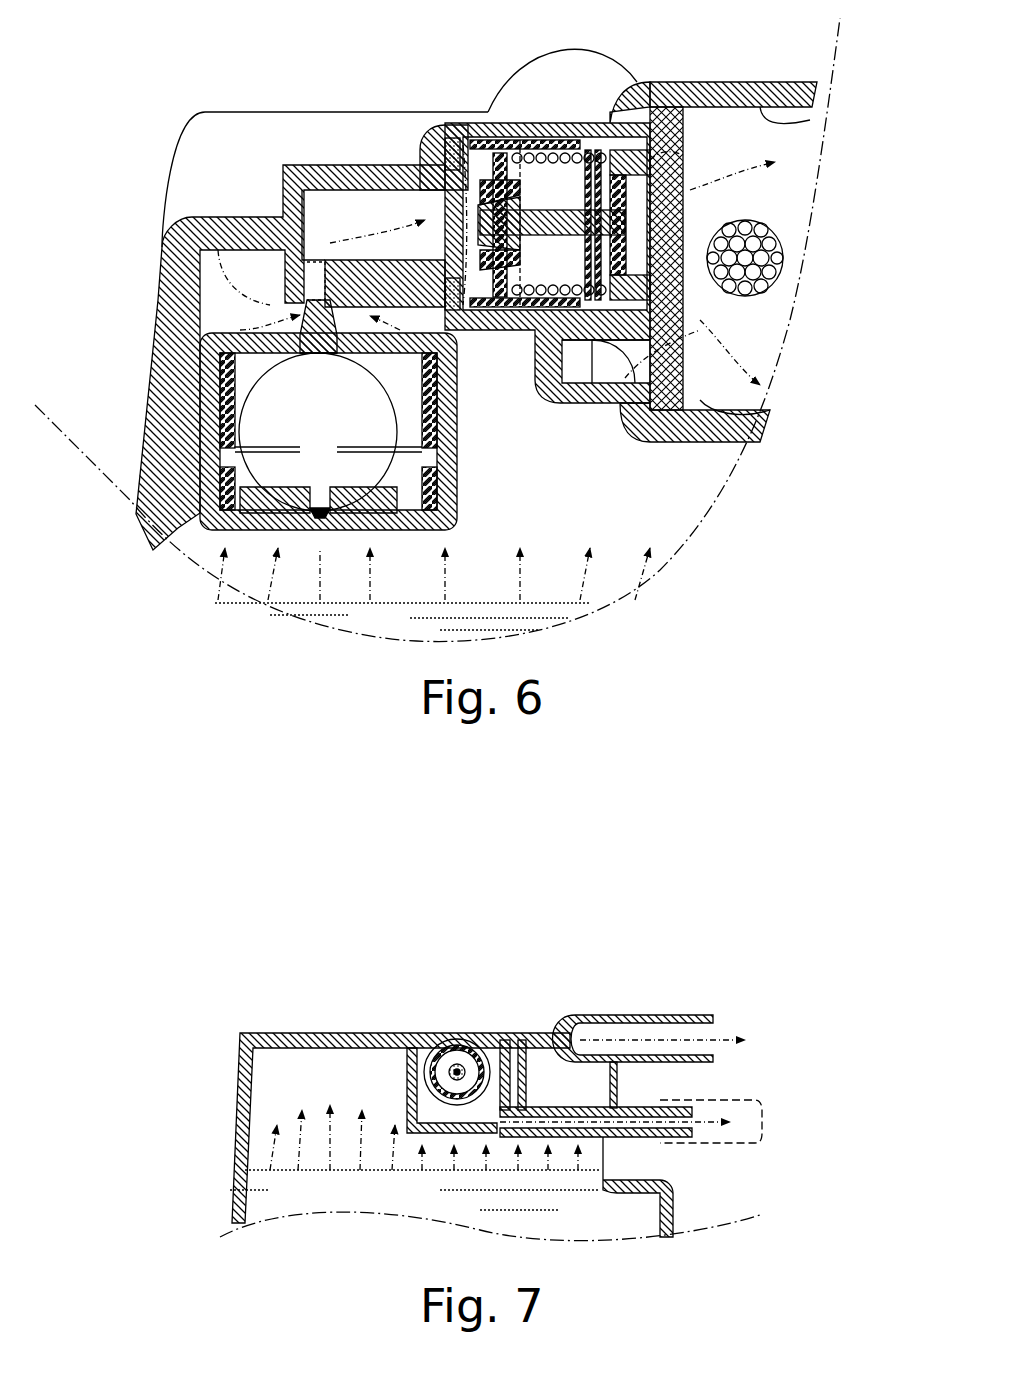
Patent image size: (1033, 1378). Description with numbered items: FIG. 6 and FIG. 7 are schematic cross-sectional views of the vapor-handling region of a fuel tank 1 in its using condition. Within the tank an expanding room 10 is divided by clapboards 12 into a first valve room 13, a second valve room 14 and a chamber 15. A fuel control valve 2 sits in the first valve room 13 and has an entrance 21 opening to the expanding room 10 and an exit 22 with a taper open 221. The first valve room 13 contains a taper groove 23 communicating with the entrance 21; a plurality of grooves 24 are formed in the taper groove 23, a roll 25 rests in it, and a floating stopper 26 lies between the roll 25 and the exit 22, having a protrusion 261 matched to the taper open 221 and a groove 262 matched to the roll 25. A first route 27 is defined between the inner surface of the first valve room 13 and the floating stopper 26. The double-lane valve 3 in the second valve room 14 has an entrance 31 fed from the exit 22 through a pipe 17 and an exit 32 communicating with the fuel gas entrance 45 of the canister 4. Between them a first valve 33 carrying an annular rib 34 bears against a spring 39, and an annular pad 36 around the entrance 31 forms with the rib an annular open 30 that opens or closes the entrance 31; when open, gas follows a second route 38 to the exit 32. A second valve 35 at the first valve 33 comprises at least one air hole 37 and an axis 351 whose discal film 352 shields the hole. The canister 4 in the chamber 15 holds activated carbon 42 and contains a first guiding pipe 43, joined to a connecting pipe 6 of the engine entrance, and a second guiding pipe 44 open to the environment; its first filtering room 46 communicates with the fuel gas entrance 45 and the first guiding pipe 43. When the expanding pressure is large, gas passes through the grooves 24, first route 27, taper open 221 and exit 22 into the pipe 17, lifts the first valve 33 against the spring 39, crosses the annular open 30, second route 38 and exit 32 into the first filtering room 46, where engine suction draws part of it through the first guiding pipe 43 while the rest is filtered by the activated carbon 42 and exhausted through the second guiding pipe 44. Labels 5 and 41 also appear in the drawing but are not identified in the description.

In FIG. 6, the fuel tank 1 is at (140, 100).
In FIG. 7, the fuel tank 1 is at (215, 1025).
In FIG. 6, the fuel control valve 2 is at (150, 350).
In FIG. 6, the double-lane valve 3 is at (490, 140).
In FIG. 6, the canister 4 is at (788, 75).
In FIG. 7, the canister 4 is at (522, 1040).
In FIG. 6, the liquid level 5 is at (318, 625).
In FIG. 7, the liquid level 5 is at (265, 1190).
In FIG. 7, the connecting pipe 6 is at (718, 1100).
In FIG. 6, the expending room 10 is at (700, 482).
In FIG. 7, the expending room 10 is at (290, 1112).
In FIG. 7, the clapboard 12 is at (410, 1085).
In FIG. 6, the first valve room 13 is at (215, 288).
In FIG. 6, the second valve room 14 is at (545, 375).
In FIG. 6, the chamber 15 is at (810, 120).
In FIG. 6, the pipe 17 is at (372, 222).
In FIG. 6, the entrance 21 is at (300, 530).
In FIG. 6, the exit 22 is at (312, 295).
In FIG. 6, the taper open 221 is at (240, 295).
In FIG. 6, the taper groove 23 is at (290, 515).
In FIG. 6, the groove 24 is at (230, 520).
In FIG. 6, the roll 25 is at (228, 380).
In FIG. 6, the floating stopper 26 is at (240, 330).
In FIG. 6, the protrusion 261 is at (262, 308).
In FIG. 6, the groove 262 is at (238, 420).
In FIG. 6, the first route 27 is at (228, 400).
In FIG. 6, the annular open 30 is at (455, 128).
In FIG. 6, the entrance 31 is at (422, 220).
In FIG. 6, the exit 32 is at (635, 115).
In FIG. 6, the first valve 33 is at (495, 330).
In FIG. 6, the annular rib 34 is at (482, 320).
In FIG. 6, the second valve 35 is at (515, 320).
In FIG. 6, the axis 351 is at (532, 140).
In FIG. 6, the discal film 352 is at (455, 140).
In FIG. 6, the annular pad 36 is at (440, 168).
In FIG. 6, the air hole 37 is at (510, 150).
In FIG. 6, the second route 38 is at (587, 150).
In FIG. 6, the spring 39 is at (618, 150).
In FIG. 6, the porous wall 41 is at (683, 140).
In FIG. 6, the activated carbon 42 is at (786, 270).
In FIG. 6, the first guiding pipe 43 is at (606, 383).
In FIG. 7, the first guiding pipe 43 is at (640, 1140).
In FIG. 6, the second guiding pipe 44 is at (612, 90).
In FIG. 7, the second guiding pipe 44 is at (655, 1040).
In FIG. 6, the fuel gas entrance 45 is at (650, 125).
In FIG. 7, the fuel gas entrance 45 is at (440, 1055).
In FIG. 6, the first filtering room 46 is at (770, 396).